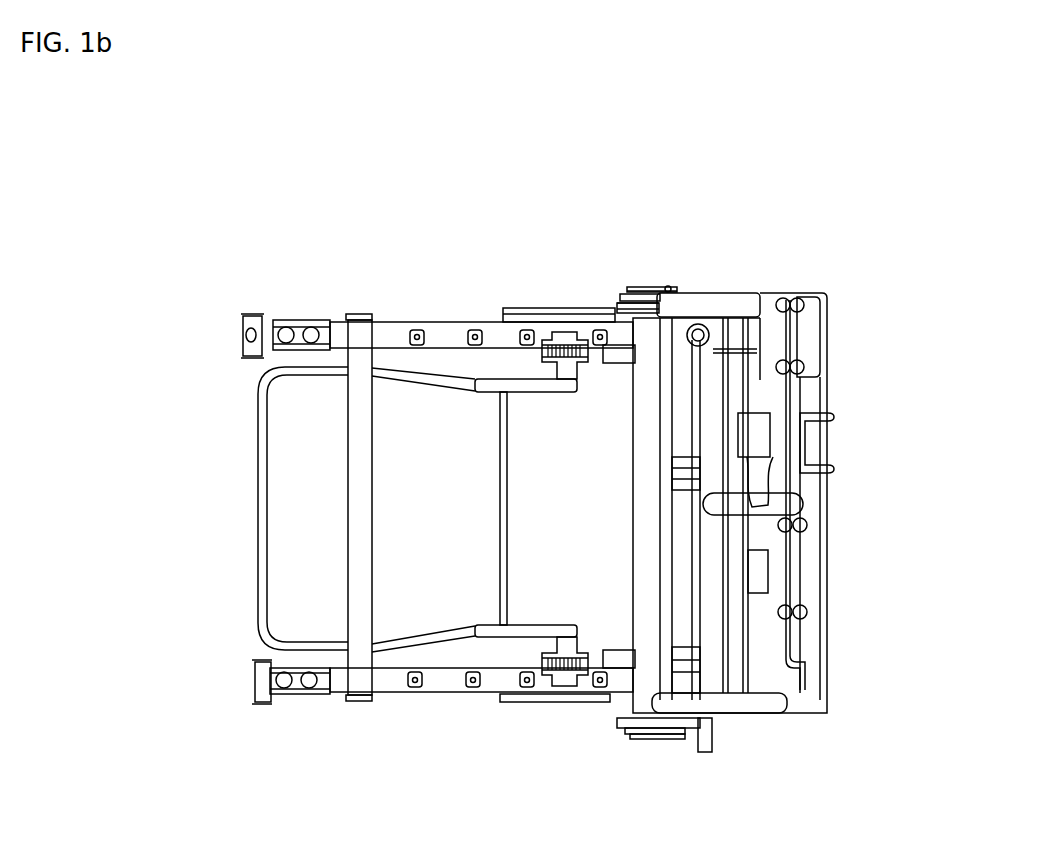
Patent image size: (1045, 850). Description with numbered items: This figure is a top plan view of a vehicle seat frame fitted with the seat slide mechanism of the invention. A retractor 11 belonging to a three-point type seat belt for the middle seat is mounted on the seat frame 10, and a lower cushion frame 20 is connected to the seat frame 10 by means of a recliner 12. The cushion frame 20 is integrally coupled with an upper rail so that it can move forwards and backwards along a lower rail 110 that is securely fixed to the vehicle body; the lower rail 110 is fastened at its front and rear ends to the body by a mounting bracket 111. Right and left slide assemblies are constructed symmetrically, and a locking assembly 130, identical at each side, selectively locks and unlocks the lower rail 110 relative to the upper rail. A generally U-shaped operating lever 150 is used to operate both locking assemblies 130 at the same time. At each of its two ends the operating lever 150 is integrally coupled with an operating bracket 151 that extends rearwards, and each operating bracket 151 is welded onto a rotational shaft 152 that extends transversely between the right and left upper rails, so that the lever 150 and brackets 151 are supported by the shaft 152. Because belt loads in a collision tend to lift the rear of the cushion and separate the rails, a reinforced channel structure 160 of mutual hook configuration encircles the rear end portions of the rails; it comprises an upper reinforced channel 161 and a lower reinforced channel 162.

The seat frame 10 is at (815, 500).
The retractor 11 is at (820, 440).
The recliner 12 is at (660, 745).
The lower cushion frame 20 is at (455, 322).
The lower rail 110 is at (303, 320).
The mounting bracket 111 is at (258, 318).
The locking assembly 130 is at (588, 385).
The operating lever 150 is at (262, 478).
The operating bracket 151 is at (518, 398).
The rotational shaft 152 is at (500, 435).
The reinforced channel structure 160 is at (692, 200).
The upper reinforced channel 161 is at (603, 330).
The lower reinforced channel 162 is at (565, 306).